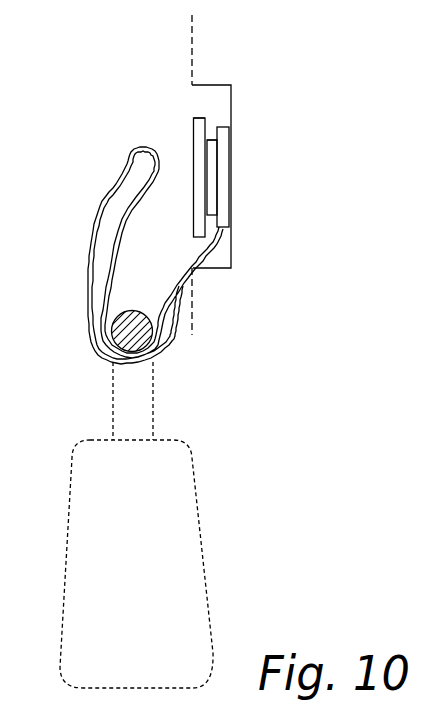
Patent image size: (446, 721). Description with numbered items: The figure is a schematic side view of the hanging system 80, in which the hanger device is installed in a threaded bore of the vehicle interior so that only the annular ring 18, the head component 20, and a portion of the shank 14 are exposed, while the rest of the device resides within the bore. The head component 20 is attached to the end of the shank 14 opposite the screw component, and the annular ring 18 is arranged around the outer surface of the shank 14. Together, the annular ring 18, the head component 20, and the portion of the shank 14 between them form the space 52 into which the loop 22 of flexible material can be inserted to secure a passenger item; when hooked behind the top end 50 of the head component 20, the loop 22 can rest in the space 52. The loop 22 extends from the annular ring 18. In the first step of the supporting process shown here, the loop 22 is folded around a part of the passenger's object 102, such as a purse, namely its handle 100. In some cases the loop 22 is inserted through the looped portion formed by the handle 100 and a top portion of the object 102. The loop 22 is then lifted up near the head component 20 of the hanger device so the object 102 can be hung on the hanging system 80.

The hanging system 80 is at (255, 123).
The head component 20 is at (192, 135).
The annular ring 18 is at (231, 158).
The shank 14 is at (210, 188).
The top end 50 is at (203, 117).
The space 52 is at (211, 127).
The loop 22 is at (102, 202).
The handle 100 is at (134, 311).
The passenger object 102 is at (195, 495).